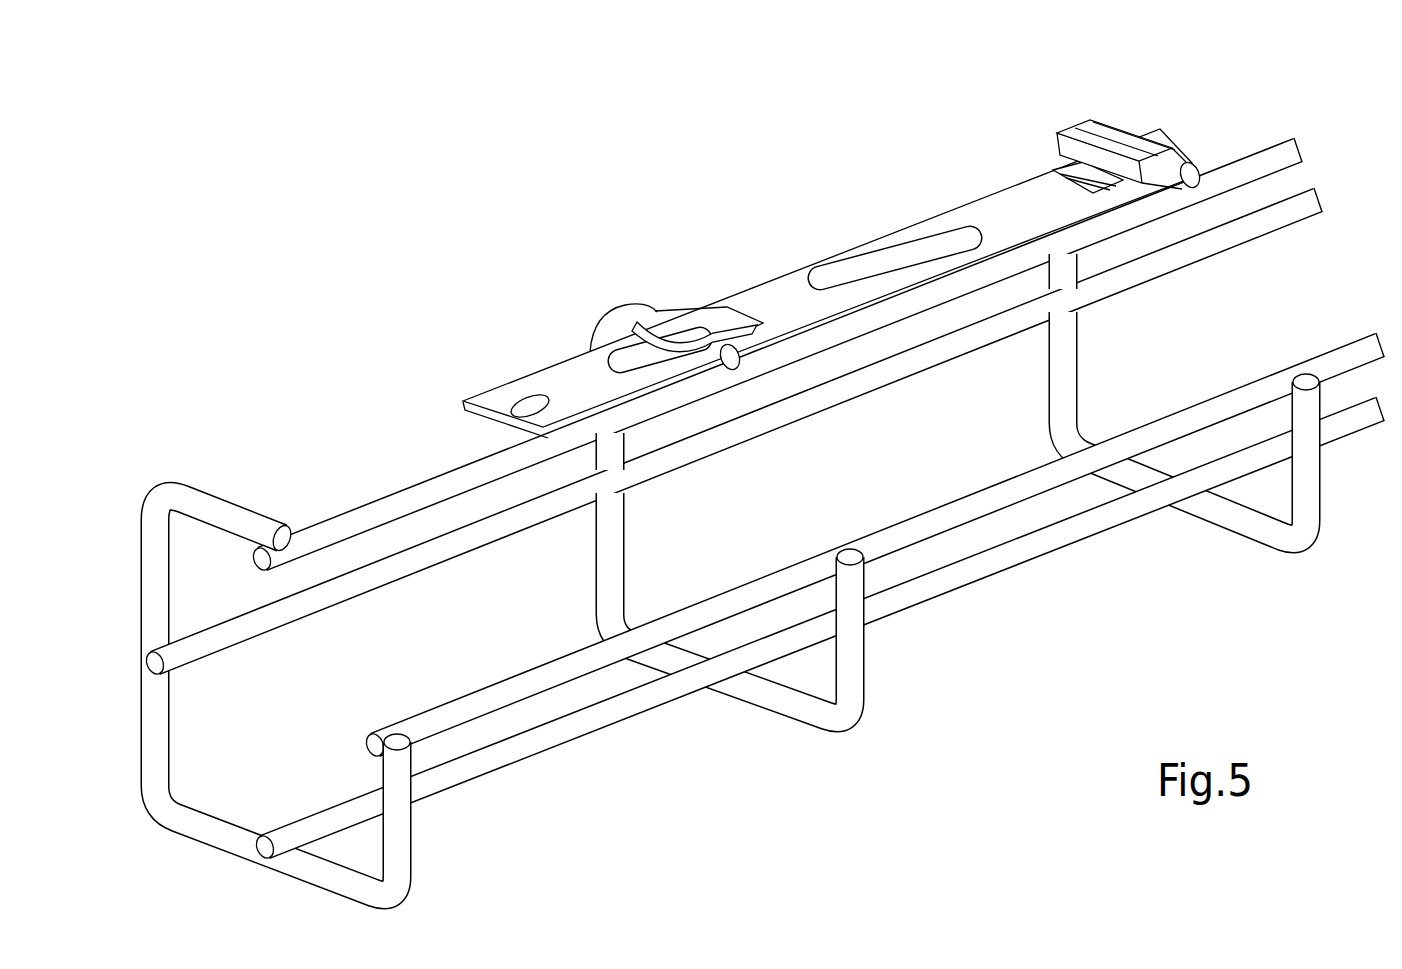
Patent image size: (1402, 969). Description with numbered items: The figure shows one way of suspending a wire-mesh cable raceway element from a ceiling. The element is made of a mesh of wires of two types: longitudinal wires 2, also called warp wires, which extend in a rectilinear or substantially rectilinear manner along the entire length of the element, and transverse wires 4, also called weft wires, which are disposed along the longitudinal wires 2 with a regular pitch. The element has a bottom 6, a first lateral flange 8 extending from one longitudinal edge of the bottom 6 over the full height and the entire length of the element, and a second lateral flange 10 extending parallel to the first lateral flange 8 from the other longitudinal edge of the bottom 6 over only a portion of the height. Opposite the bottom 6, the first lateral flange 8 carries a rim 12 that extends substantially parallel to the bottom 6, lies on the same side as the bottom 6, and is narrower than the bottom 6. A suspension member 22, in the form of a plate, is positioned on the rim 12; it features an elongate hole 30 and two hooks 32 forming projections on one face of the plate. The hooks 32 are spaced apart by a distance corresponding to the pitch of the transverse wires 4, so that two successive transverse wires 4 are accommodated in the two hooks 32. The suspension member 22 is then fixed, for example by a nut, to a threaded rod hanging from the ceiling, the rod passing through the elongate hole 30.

The longitudinal wire 2 is at (372, 573).
The transverse wire 4 is at (764, 597).
The bottom 6 is at (227, 847).
The first lateral flange 8 is at (147, 742).
The second lateral flange 10 is at (400, 832).
The rim 12 is at (236, 515).
The suspension member 22 is at (833, 234).
The elongate hole 30 is at (873, 267).
The hook 32 is at (665, 322).